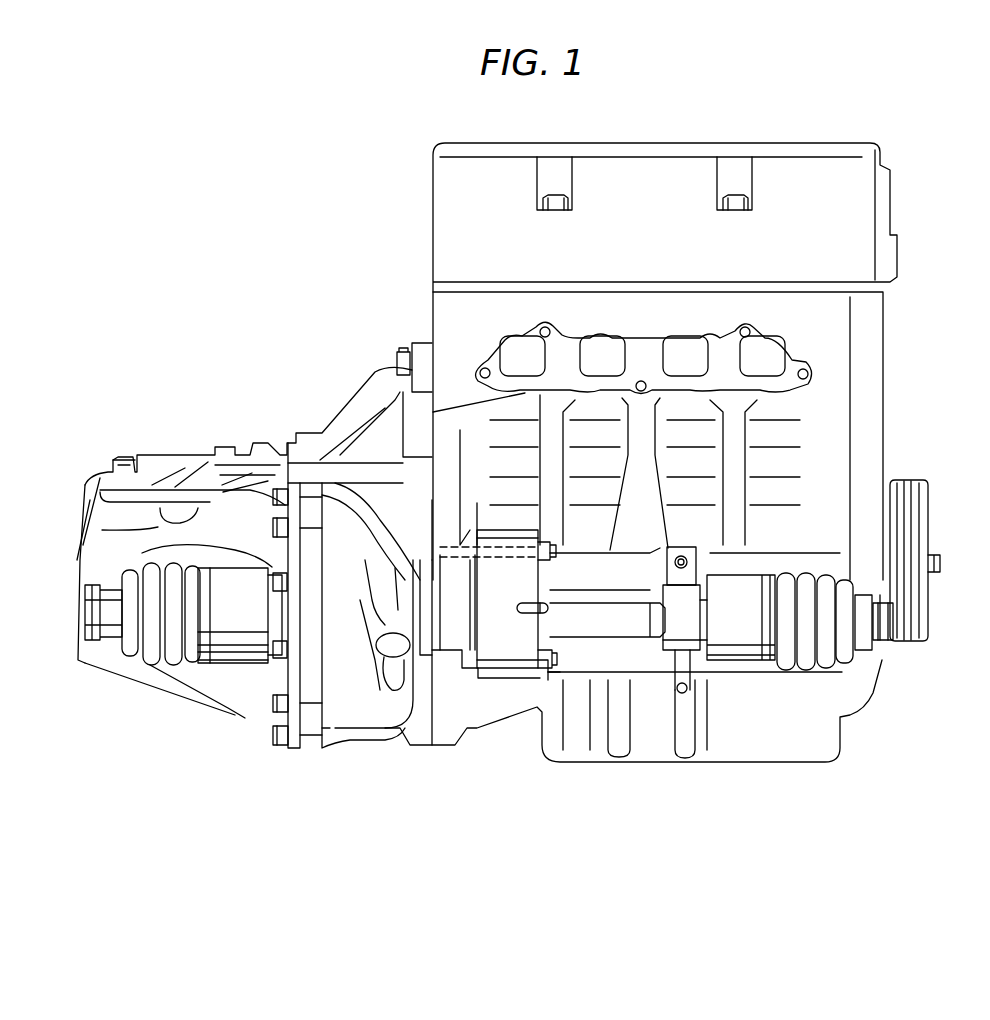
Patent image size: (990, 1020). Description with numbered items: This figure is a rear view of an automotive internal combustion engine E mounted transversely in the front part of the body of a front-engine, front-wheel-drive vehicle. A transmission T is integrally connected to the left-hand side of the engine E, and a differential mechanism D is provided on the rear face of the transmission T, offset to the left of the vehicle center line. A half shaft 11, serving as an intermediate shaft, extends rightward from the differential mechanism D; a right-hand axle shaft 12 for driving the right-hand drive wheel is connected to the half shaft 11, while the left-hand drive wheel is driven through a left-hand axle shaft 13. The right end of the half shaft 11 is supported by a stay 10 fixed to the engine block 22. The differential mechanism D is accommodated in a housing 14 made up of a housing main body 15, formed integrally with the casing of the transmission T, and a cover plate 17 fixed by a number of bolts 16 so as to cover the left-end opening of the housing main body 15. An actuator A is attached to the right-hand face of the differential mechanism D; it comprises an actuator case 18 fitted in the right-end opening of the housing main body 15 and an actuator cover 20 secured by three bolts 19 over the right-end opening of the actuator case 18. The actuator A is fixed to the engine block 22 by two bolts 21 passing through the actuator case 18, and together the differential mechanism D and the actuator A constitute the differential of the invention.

The internal combustion engine E is at (902, 370).
The transmission T is at (297, 417).
The differential mechanism D is at (403, 503).
The actuator A is at (501, 690).
The stay 10 is at (683, 604).
The half shaft 11 is at (632, 620).
The right-hand axle shaft 12 is at (881, 622).
The left-hand axle shaft 13 is at (95, 620).
The housing 14 is at (354, 638).
The housing main body 15 is at (370, 715).
The bolts 16 is at (275, 526).
The cover plate 17 is at (303, 725).
The actuator case 18 is at (496, 658).
The bolts 19 is at (549, 611).
The actuator cover 20 is at (552, 574).
The bolts 21 is at (552, 550).
The engine block 22 is at (650, 503).